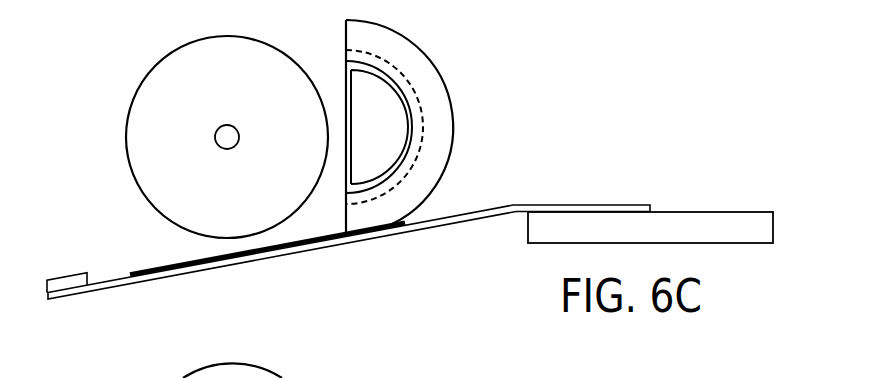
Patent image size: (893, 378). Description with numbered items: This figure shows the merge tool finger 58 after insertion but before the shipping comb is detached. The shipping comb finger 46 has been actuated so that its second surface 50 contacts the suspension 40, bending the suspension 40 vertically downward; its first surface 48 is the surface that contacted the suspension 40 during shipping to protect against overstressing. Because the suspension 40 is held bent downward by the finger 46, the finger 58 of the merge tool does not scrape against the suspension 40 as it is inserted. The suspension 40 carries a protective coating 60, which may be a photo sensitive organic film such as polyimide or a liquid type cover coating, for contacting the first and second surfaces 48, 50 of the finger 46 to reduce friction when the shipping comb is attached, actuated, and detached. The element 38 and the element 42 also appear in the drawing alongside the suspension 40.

The platen 38 is at (673, 222).
The suspension 40 is at (228, 265).
The end tab 42 is at (67, 283).
The finger 46 is at (362, 115).
The first surface 48 is at (415, 90).
The second surface 50 is at (452, 125).
The finger of the merge tool 58 is at (126, 138).
The protective coating 60 is at (160, 269).